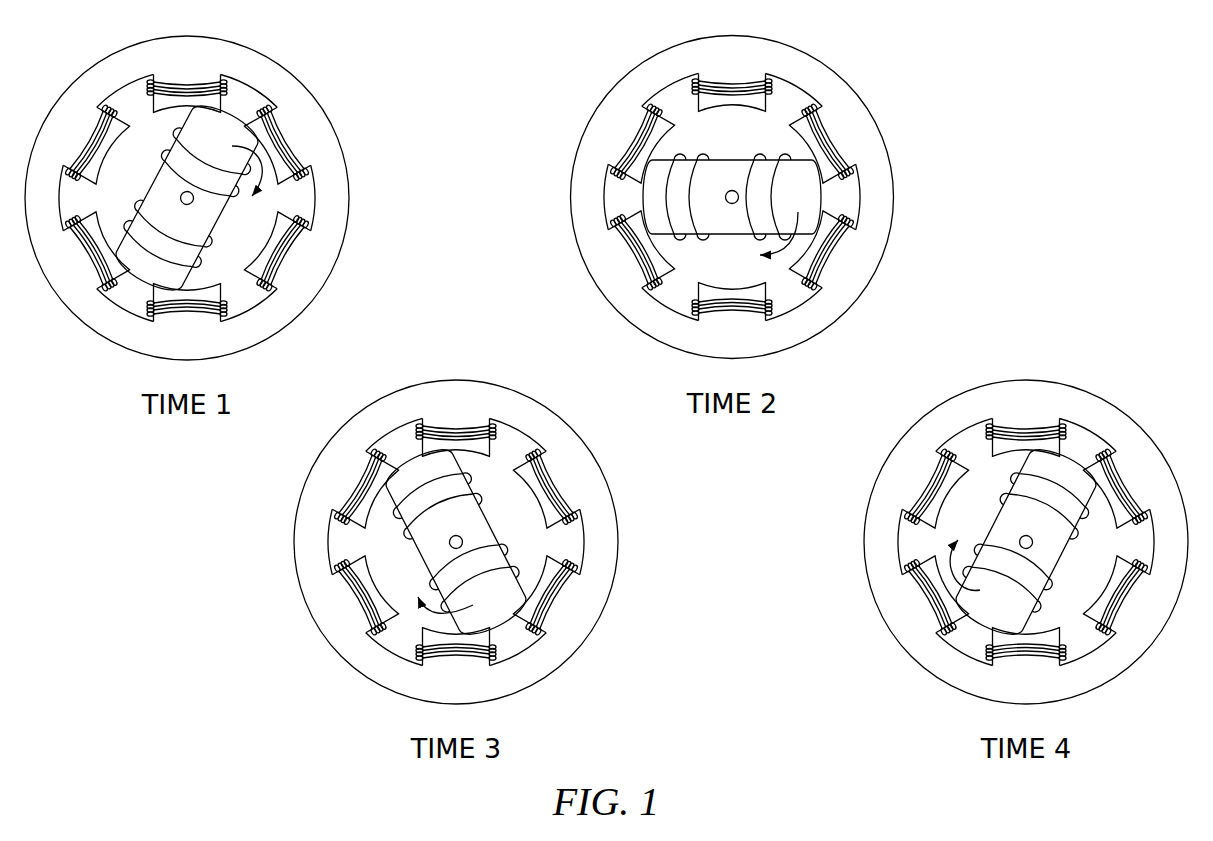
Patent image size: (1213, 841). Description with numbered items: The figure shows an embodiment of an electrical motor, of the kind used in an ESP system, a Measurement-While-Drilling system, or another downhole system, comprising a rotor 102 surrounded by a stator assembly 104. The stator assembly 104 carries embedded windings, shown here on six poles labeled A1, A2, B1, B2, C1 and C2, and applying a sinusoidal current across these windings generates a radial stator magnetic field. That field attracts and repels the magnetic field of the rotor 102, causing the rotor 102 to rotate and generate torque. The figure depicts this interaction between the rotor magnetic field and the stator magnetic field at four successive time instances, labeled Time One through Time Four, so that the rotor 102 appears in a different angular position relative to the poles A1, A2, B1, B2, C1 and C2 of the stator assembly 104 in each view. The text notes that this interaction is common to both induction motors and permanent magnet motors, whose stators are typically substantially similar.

The rotor 102 is at (240, 117).
The stator assembly 104 is at (307, 310).
The stator pole A1 is at (631, 233).
The stator pole A2 is at (581, 506).
The stator pole B1 is at (704, 443).
The stator pole B2 is at (509, 295).
The stator pole C1 is at (496, 402).
The stator pole C2 is at (716, 337).